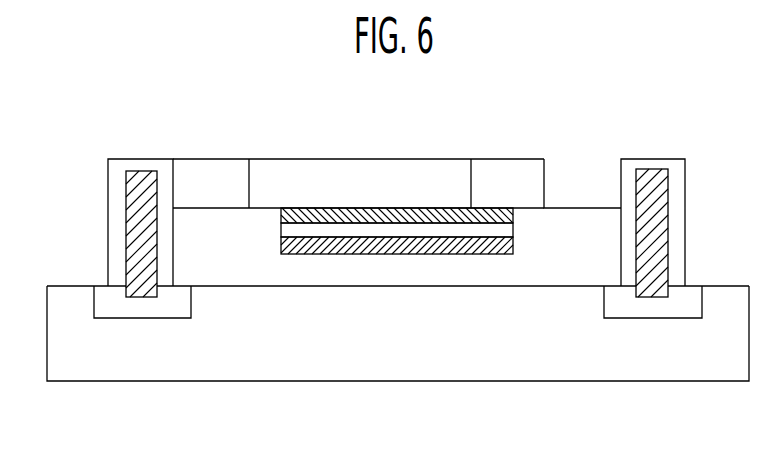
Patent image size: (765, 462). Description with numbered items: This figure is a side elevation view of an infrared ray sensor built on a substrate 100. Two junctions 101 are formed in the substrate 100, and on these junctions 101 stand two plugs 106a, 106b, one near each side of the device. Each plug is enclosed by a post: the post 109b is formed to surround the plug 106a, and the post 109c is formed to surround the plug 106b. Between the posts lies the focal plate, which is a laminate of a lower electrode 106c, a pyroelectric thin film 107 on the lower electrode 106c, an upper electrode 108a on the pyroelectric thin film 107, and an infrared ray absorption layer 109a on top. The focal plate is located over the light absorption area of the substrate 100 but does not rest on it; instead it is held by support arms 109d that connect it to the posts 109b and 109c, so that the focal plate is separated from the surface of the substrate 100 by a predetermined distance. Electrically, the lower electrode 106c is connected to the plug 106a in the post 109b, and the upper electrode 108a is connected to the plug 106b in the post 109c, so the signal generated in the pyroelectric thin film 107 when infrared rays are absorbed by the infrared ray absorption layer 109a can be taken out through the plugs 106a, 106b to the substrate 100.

The substrate 100 is at (709, 379).
The junctions 101 is at (128, 310).
The plug 106a is at (662, 213).
The plug 106b is at (133, 217).
The lower electrode 106c is at (331, 248).
The pyroelectric thin film 107 is at (386, 230).
The upper electrode 108a is at (444, 215).
The infrared ray absorption layer 109a is at (340, 172).
The post 109b is at (652, 159).
The post 109c is at (128, 158).
The support arms 109d is at (214, 169).